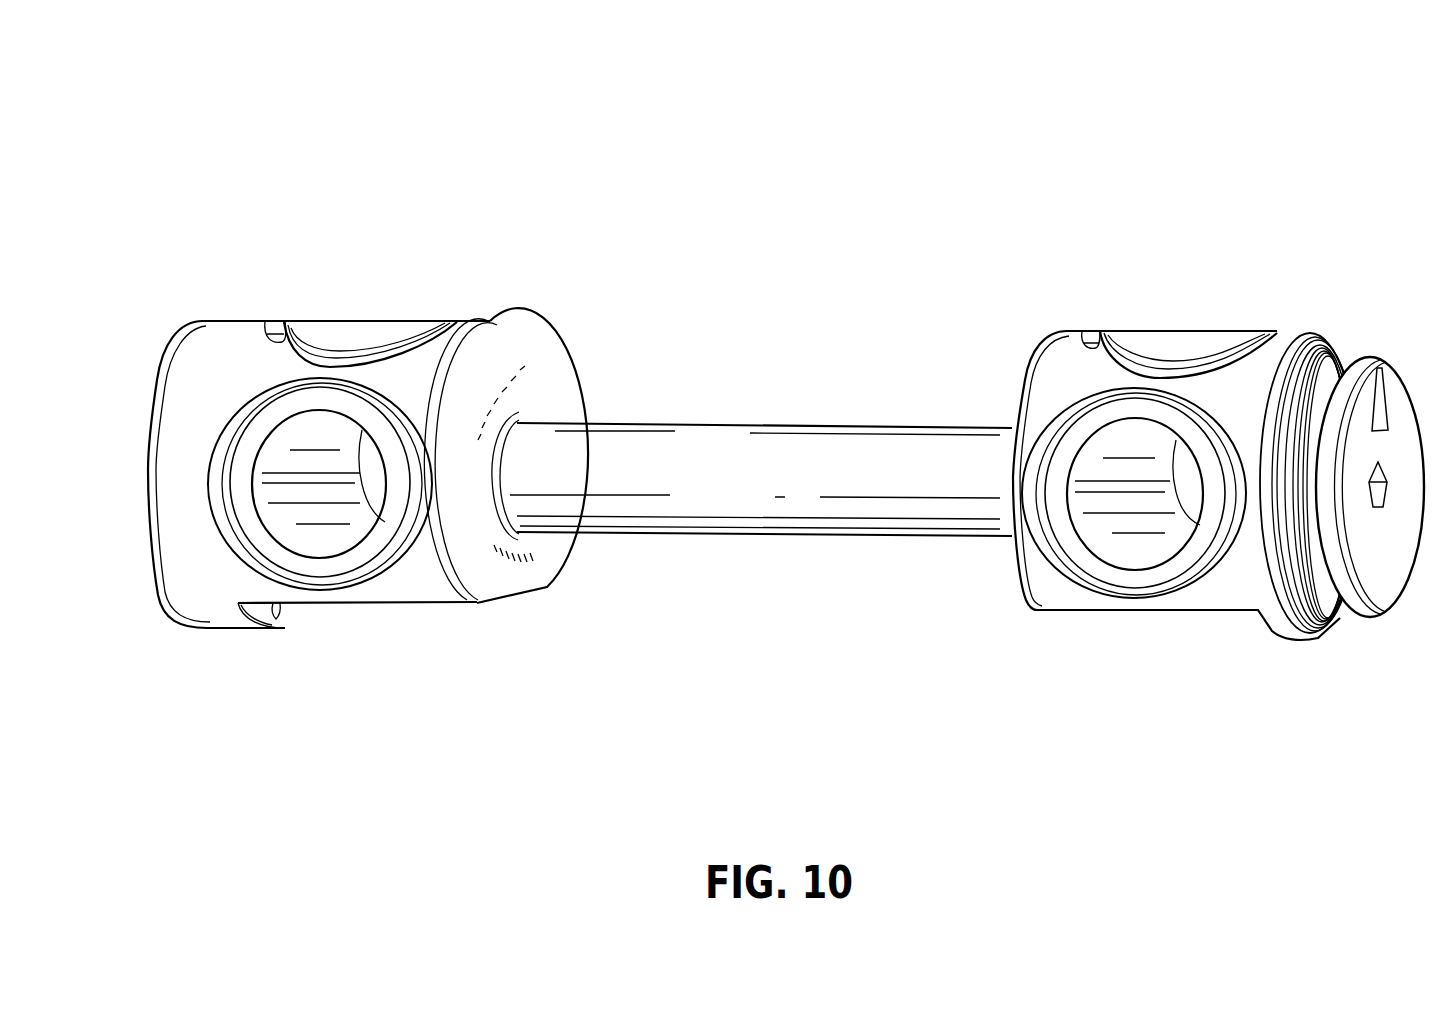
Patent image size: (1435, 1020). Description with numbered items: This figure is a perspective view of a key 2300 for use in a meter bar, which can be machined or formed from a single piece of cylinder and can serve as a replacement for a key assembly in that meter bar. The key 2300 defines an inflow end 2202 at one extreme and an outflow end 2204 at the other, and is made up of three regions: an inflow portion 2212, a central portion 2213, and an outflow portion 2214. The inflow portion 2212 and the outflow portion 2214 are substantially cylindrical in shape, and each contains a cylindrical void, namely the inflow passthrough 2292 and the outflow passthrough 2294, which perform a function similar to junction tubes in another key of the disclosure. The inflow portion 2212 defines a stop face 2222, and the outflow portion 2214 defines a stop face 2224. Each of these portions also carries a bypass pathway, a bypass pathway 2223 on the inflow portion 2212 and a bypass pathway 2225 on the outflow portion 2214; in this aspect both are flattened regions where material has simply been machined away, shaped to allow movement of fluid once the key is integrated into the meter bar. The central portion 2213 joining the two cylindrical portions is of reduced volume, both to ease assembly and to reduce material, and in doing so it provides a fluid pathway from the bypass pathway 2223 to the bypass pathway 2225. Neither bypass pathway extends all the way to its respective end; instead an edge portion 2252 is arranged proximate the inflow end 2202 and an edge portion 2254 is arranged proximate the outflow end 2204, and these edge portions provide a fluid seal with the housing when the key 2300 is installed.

The key 2300 is at (938, 107).
The central portion 2213 is at (868, 313).
The inflow end 2202 is at (170, 200).
The inflow portion 2212 is at (237, 283).
The stop face 2222 is at (358, 330).
The bypass pathway 2223 is at (480, 603).
The edge portion 2252 is at (215, 630).
The inflow passthrough 2292 is at (311, 545).
The outflow end 2204 is at (1383, 248).
The outflow portion 2214 is at (1302, 290).
The stop face 2224 is at (1152, 325).
The bypass pathway 2225 is at (1233, 623).
The outflow passthrough 2294 is at (1140, 545).
The edge portion 2254 is at (1313, 640).